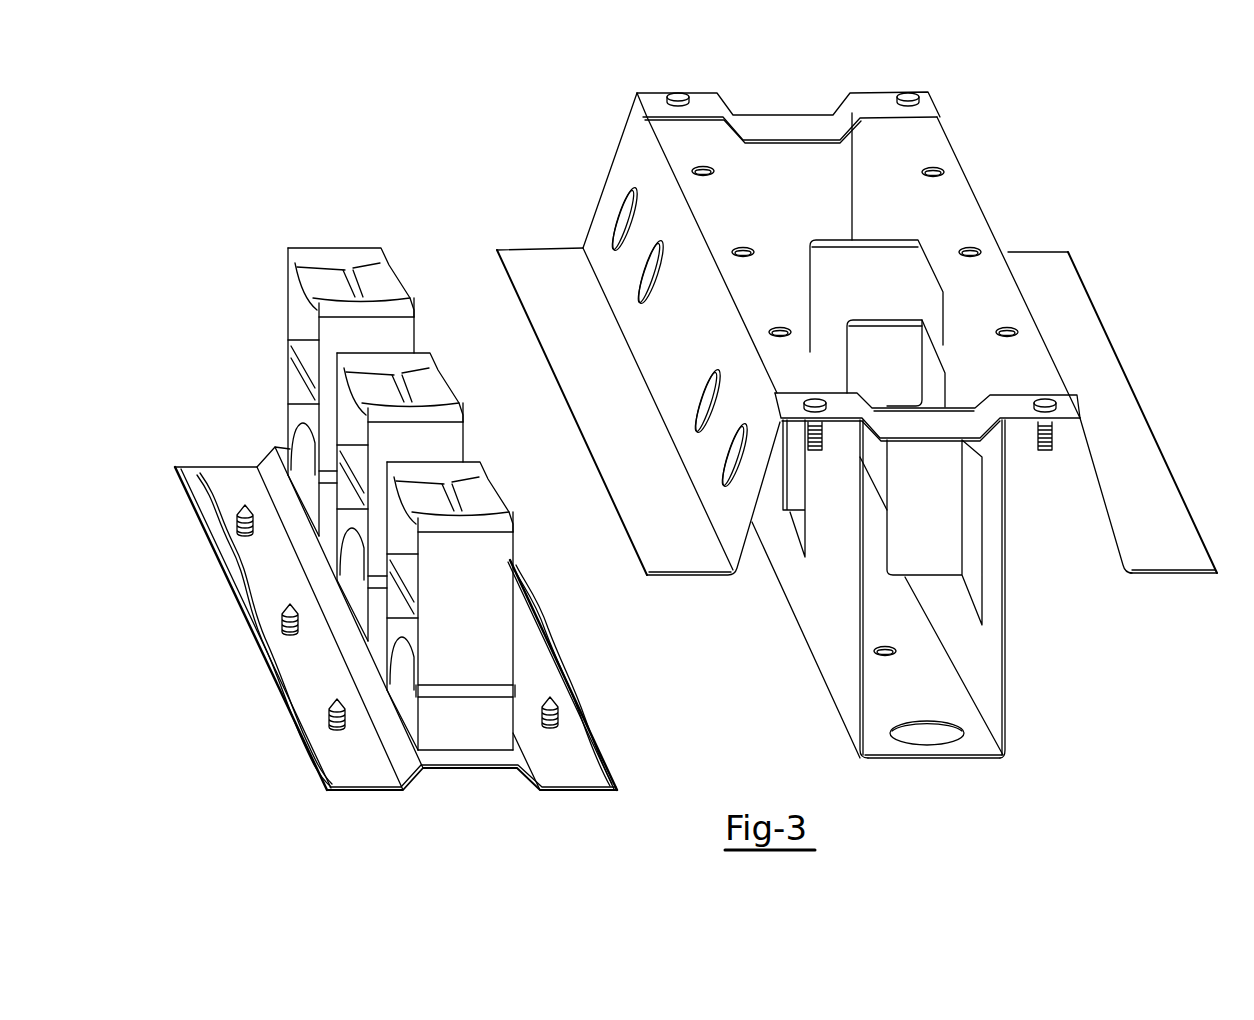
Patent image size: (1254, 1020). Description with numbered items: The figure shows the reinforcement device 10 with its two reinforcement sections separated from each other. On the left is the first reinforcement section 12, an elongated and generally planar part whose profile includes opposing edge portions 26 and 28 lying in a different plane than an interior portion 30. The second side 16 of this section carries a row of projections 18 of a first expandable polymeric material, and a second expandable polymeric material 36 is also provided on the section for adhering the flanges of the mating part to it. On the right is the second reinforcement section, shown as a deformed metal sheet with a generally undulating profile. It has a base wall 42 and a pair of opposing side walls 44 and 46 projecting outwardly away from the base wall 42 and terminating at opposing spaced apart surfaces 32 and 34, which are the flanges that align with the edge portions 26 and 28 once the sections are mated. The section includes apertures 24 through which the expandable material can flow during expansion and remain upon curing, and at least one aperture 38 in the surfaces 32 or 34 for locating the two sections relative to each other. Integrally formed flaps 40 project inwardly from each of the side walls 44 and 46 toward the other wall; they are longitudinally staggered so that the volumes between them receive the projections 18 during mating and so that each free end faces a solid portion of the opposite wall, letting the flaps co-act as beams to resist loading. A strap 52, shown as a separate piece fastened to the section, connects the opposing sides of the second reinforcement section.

The reinforcement device 10 is at (461, 185).
The first reinforcement section 12 is at (183, 470).
The second side 16 is at (440, 757).
The projection 18 is at (400, 333).
The aperture 24 is at (710, 390).
The edge portion 26 is at (298, 677).
The edge portion 28 is at (585, 766).
The interior portion 30 is at (490, 767).
The spaced apart surface 32 is at (930, 140).
The spaced apart surface 34 is at (670, 138).
The second expandable polymeric material 36 is at (225, 478).
The aperture 38 is at (971, 250).
The flap 40 is at (830, 250).
The base wall 42 is at (953, 745).
The side wall 44 is at (1003, 670).
The side wall 46 is at (847, 667).
The strap 52 is at (770, 122).